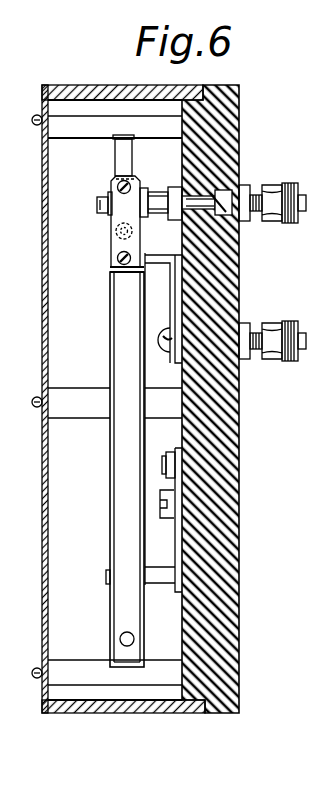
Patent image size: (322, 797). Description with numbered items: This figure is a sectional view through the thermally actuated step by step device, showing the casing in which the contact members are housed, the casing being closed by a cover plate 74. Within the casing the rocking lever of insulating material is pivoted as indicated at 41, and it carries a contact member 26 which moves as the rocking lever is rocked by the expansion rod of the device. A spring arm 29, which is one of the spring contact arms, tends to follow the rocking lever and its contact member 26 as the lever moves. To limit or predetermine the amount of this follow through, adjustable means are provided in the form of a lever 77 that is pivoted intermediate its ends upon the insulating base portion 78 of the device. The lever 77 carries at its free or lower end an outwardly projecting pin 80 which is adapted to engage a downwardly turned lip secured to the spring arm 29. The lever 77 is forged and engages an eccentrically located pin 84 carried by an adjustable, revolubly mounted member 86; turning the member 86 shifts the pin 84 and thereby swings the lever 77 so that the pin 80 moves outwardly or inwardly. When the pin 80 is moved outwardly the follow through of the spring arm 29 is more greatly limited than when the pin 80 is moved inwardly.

The cover plate 74 is at (42, 256).
The insulating base portion 78 is at (232, 586).
The contact member 26 is at (120, 322).
The spring arm 29 is at (110, 505).
The outwardly projecting pin 80 is at (105, 577).
The pivot 41 is at (97, 202).
The adjustable revolubly mounted member 86 is at (182, 441).
The eccentrically located pin 84 is at (168, 482).
The lever 77 is at (182, 538).